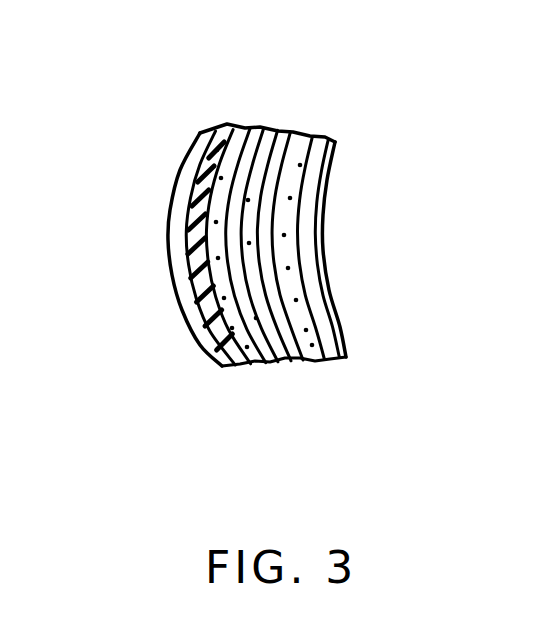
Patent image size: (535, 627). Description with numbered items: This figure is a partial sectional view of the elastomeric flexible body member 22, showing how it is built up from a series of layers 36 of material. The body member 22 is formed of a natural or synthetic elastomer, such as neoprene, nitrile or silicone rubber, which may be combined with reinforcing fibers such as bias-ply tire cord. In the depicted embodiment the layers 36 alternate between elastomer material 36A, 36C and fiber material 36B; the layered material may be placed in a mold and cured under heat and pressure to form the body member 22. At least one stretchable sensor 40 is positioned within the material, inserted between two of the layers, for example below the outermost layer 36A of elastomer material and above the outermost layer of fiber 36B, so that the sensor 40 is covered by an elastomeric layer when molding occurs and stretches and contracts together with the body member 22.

The flexible body member 22 is at (172, 307).
The layers 36 is at (280, 358).
The outermost layer of elastomer material 36A is at (197, 140).
The fiber material layer 36B is at (250, 121).
The elastomer material layer 36C is at (346, 360).
The stretchable sensor 40 is at (197, 263).